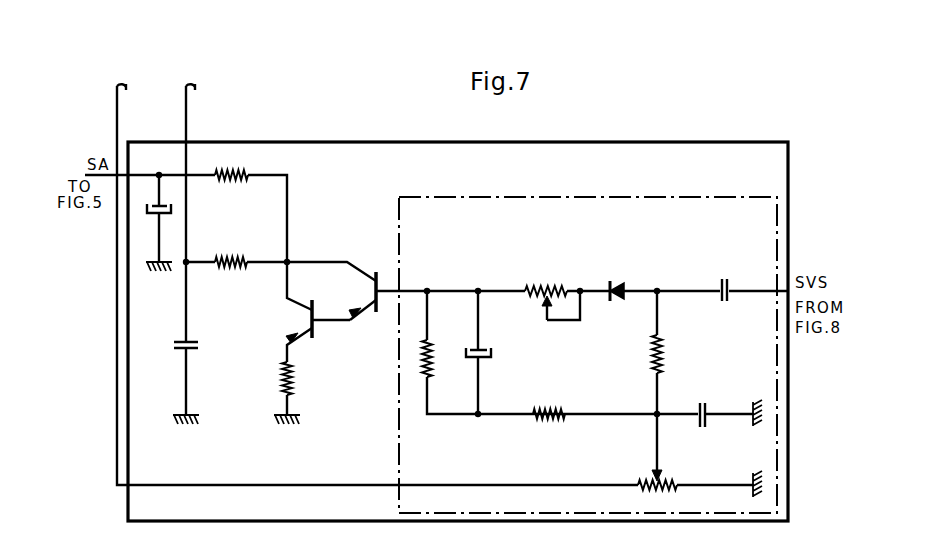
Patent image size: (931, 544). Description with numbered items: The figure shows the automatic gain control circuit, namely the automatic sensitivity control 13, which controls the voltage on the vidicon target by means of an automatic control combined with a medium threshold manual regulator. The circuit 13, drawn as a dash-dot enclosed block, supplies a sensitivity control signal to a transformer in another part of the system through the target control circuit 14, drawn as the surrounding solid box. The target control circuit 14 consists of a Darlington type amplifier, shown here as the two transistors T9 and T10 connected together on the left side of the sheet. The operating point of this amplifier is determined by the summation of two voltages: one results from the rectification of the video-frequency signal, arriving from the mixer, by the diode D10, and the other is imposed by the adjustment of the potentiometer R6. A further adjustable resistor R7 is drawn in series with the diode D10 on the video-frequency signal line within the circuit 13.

The automatic sensitivity control 13 is at (763, 217).
The target control circuit 14 is at (362, 153).
The transistor T9 is at (310, 331).
The transistor T10 is at (354, 296).
The variable resistor R7 is at (560, 280).
The diode D10 is at (620, 289).
The potentiometer R6 is at (657, 490).